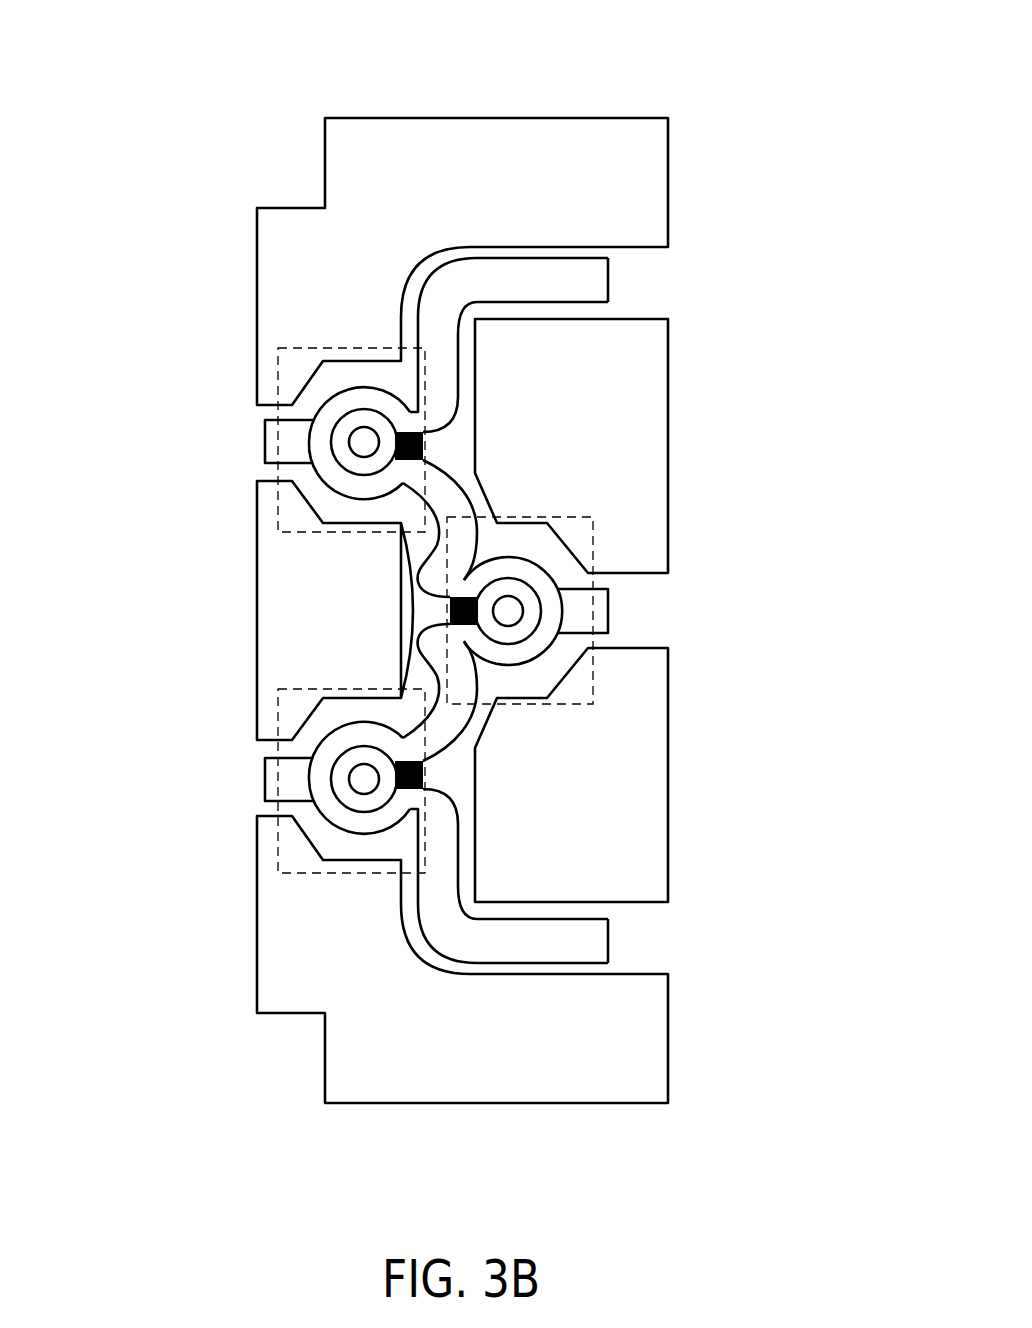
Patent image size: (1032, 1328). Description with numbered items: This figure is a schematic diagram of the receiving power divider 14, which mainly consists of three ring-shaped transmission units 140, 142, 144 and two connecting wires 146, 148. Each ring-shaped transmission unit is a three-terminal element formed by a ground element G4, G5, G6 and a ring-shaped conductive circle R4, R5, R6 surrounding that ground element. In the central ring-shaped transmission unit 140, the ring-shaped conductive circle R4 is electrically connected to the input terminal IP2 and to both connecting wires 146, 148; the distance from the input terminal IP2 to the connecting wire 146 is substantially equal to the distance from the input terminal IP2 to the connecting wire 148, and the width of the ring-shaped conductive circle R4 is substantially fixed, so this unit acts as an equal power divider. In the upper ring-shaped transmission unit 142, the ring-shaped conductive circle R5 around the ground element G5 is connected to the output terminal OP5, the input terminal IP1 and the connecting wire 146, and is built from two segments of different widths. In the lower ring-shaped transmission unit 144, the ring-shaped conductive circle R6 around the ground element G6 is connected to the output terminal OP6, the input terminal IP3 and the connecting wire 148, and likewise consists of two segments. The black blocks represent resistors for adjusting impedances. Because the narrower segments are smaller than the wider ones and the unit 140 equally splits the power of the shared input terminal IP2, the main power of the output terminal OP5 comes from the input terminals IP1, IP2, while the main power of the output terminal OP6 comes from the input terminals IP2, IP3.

The receiving power divider 14 is at (743, 45).
The ring-shaped transmission unit 140 is at (573, 517).
The ring-shaped transmission unit 142 is at (305, 349).
The ring-shaped transmission unit 144 is at (305, 872).
The connecting wire 146 is at (452, 547).
The connecting wire 148 is at (440, 915).
The input terminal IP1 is at (563, 345).
The input terminal IP2 is at (637, 611).
The input terminal IP3 is at (447, 877).
The output terminal OP5 is at (317, 442).
The output terminal OP6 is at (317, 779).
The ring-shaped conductive circle R4 is at (538, 578).
The ring-shaped conductive circle R5 is at (103, 382).
The ring-shaped conductive circle R6 is at (103, 711).
The ground element G4 is at (508, 611).
The ground element G5 is at (364, 443).
The ground element G6 is at (364, 778).